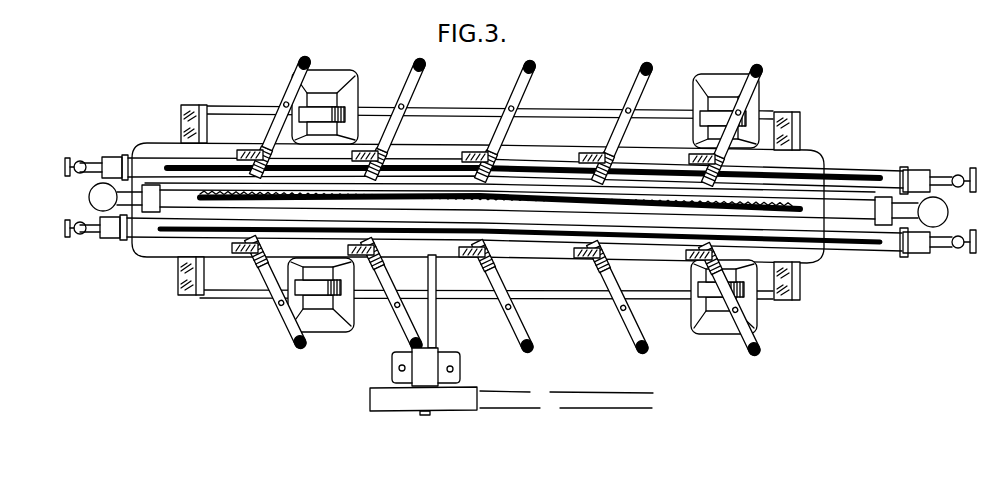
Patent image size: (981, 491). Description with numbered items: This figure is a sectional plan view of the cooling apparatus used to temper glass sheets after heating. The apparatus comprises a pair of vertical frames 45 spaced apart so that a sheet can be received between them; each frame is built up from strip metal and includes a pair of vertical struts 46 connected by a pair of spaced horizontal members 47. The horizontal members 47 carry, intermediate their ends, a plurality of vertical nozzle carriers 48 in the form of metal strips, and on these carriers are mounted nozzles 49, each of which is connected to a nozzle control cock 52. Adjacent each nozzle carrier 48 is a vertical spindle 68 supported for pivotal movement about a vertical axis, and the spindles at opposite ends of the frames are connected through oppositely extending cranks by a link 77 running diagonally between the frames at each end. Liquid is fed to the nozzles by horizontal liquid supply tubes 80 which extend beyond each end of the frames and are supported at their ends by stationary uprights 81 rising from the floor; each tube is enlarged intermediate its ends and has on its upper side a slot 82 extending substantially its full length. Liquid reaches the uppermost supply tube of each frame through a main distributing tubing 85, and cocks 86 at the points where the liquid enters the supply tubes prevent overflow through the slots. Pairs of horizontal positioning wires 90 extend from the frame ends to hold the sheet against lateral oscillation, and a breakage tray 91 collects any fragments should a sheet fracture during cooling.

The vertical frame 45 is at (178, 295).
The vertical strut 46 is at (183, 139).
The horizontal member 47 is at (250, 155).
The nozzle carrier 48 is at (605, 157).
The nozzle 49 is at (595, 154).
The nozzle control cock 52 is at (490, 260).
The spindle 68 is at (586, 260).
The link 77 is at (245, 196).
The liquid supply tube 80 is at (838, 172).
The stationary upright 81 is at (123, 160).
The slot 82 is at (185, 232).
The main distributing tubing 85 is at (950, 249).
The cock 86 is at (76, 173).
The positioning wire 90 is at (433, 197).
The breakage tray 91 is at (823, 258).